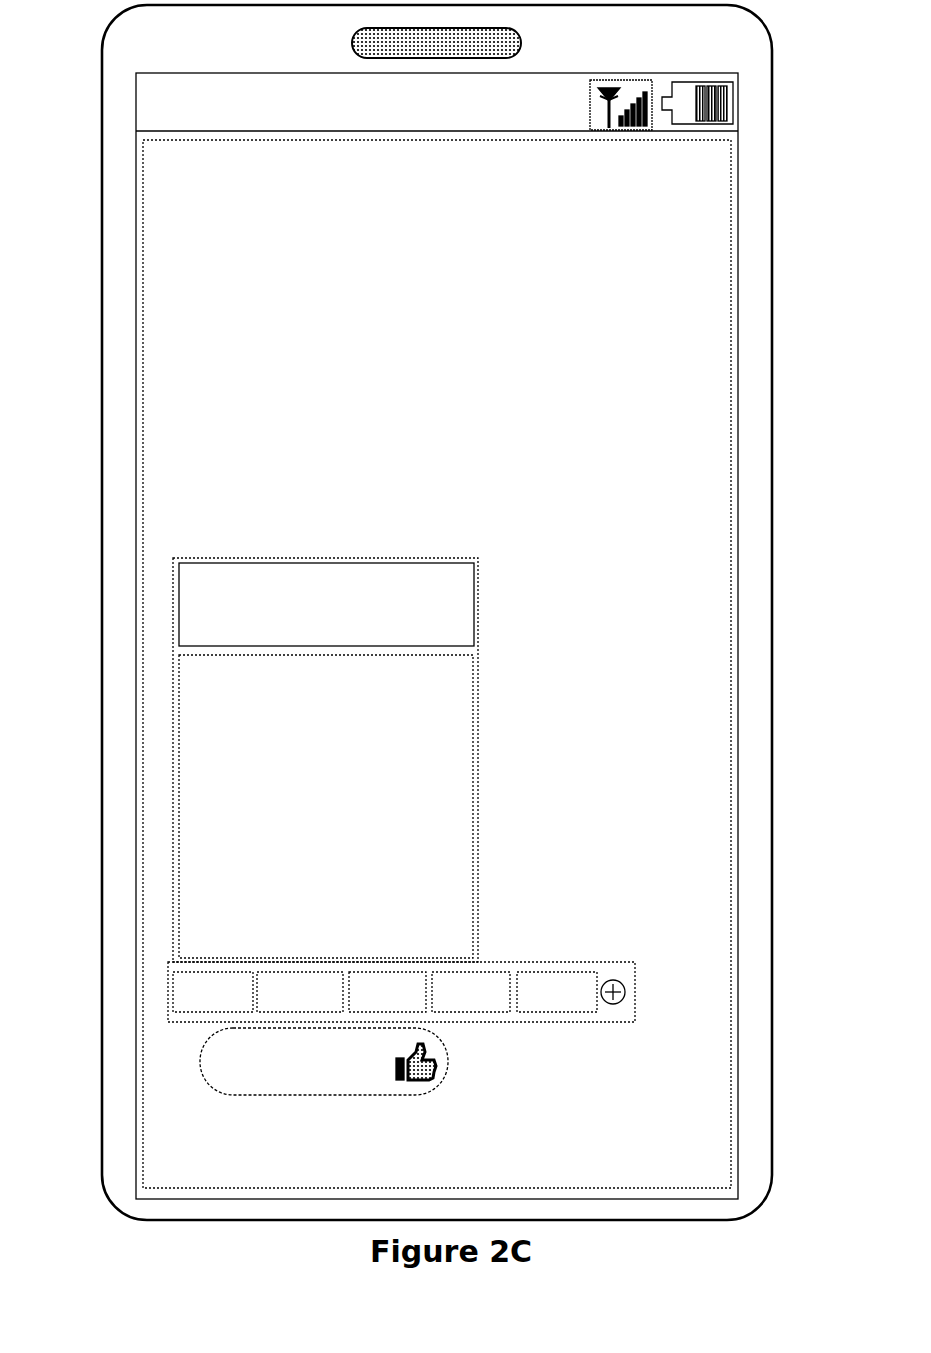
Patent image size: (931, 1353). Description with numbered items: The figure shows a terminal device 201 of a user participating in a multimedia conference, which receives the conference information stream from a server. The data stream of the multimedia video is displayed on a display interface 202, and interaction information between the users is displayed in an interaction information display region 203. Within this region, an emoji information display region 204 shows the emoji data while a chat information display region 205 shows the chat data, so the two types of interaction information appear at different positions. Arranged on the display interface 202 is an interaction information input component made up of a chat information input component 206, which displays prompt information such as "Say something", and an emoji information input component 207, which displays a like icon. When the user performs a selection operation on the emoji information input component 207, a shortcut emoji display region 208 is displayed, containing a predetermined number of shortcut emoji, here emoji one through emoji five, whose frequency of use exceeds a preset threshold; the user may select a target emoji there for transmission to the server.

The terminal device 201 is at (770, 81).
The display interface 202 is at (710, 180).
The interaction information display region 203 is at (173, 790).
The emoji information display region 204 is at (193, 590).
The chat information display region 205 is at (193, 730).
The chat information input component 206 is at (245, 1068).
The emoji information input component 207 is at (440, 1060).
The shortcut emoji display region 208 is at (168, 990).